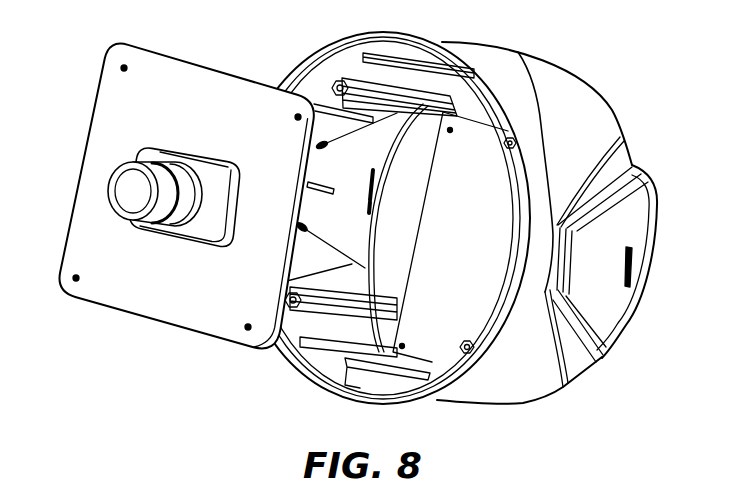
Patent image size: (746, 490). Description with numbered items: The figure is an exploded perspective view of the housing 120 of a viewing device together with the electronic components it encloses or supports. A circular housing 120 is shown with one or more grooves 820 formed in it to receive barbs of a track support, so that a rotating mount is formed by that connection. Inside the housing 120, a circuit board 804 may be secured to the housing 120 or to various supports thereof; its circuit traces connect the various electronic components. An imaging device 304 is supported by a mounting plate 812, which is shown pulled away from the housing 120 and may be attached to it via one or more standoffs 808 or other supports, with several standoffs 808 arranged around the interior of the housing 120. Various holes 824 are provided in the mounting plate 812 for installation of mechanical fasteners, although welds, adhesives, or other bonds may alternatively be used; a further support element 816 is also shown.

The housing 120 is at (583, 78).
The imaging device 304 is at (115, 168).
The circuit board 804 is at (489, 256).
The standoffs 808 is at (360, 77).
The mounting plate 812 is at (122, 44).
The top rail 816 is at (417, 62).
The grooves 820 is at (350, 393).
The holes 824 is at (124, 72).